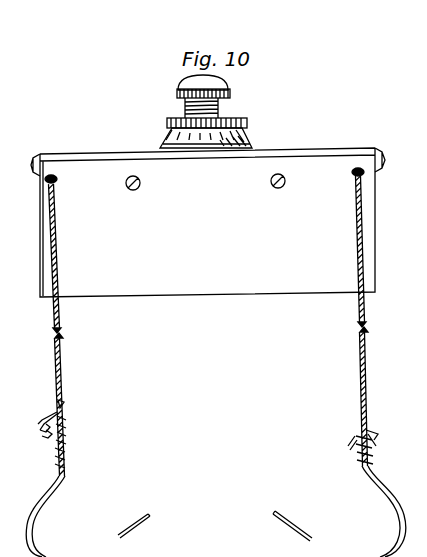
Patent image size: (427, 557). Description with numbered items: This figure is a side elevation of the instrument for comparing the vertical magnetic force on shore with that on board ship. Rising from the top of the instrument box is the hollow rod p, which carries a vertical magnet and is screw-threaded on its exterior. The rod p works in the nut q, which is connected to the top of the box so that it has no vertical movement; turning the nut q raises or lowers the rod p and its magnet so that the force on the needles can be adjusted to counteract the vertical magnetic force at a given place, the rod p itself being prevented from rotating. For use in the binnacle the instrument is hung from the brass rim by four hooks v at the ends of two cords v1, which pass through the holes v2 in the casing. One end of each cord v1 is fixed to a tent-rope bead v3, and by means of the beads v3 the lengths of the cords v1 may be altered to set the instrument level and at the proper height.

The hollow rod p is at (208, 80).
The nut q is at (243, 136).
The hook v is at (216, 511).
The cord v1 is at (209, 326).
The hole v2 is at (57, 180).
The tent-rope bead v3 is at (64, 404).